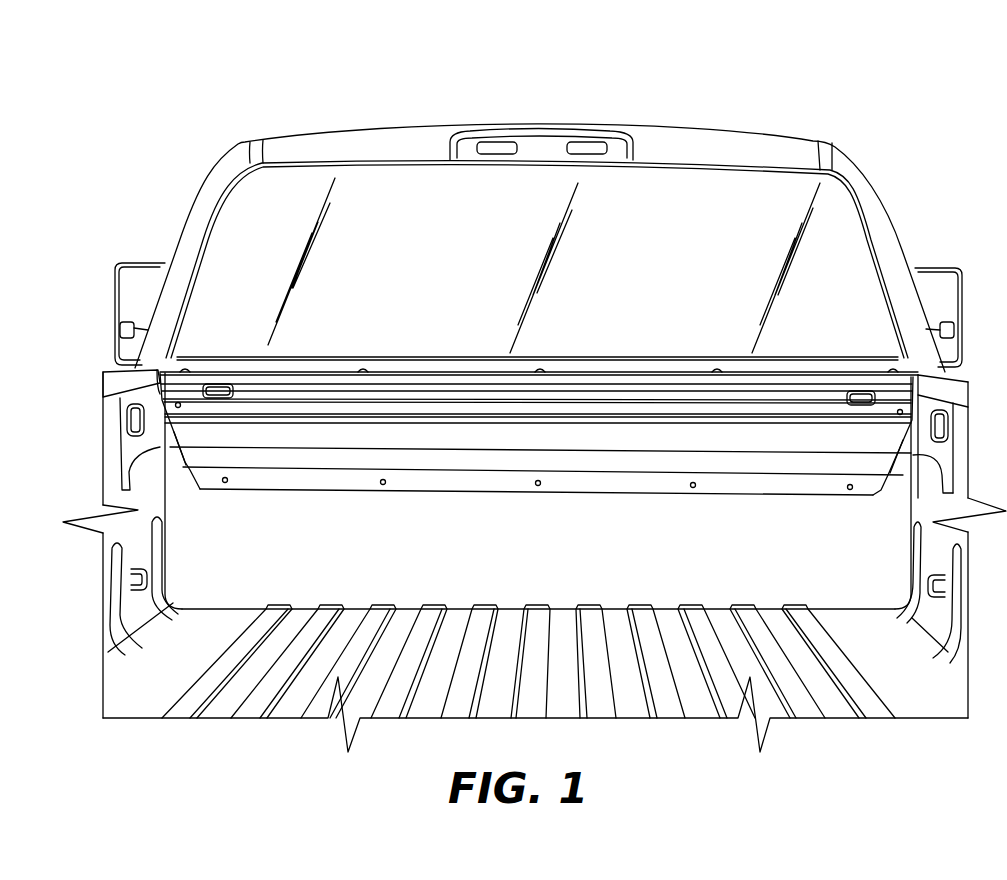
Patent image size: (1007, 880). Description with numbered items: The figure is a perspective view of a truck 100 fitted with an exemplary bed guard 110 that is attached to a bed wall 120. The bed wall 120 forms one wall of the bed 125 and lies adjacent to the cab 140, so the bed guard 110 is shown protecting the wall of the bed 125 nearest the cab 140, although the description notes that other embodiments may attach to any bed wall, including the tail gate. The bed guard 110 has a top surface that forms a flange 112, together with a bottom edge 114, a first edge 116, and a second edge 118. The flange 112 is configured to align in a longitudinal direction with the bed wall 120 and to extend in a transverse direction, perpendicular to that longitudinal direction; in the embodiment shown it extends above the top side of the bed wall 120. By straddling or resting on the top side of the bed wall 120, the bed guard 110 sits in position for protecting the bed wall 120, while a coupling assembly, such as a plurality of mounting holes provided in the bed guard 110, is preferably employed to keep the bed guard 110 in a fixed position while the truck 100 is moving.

The truck 100 is at (178, 103).
The bed guard 110 is at (185, 431).
The flange 112 is at (207, 374).
The bottom edge 114 is at (523, 494).
The first edge 116 is at (184, 467).
The second edge 118 is at (890, 472).
The bed wall 120 is at (188, 550).
The bed 125 is at (927, 493).
The cab 140 is at (213, 190).